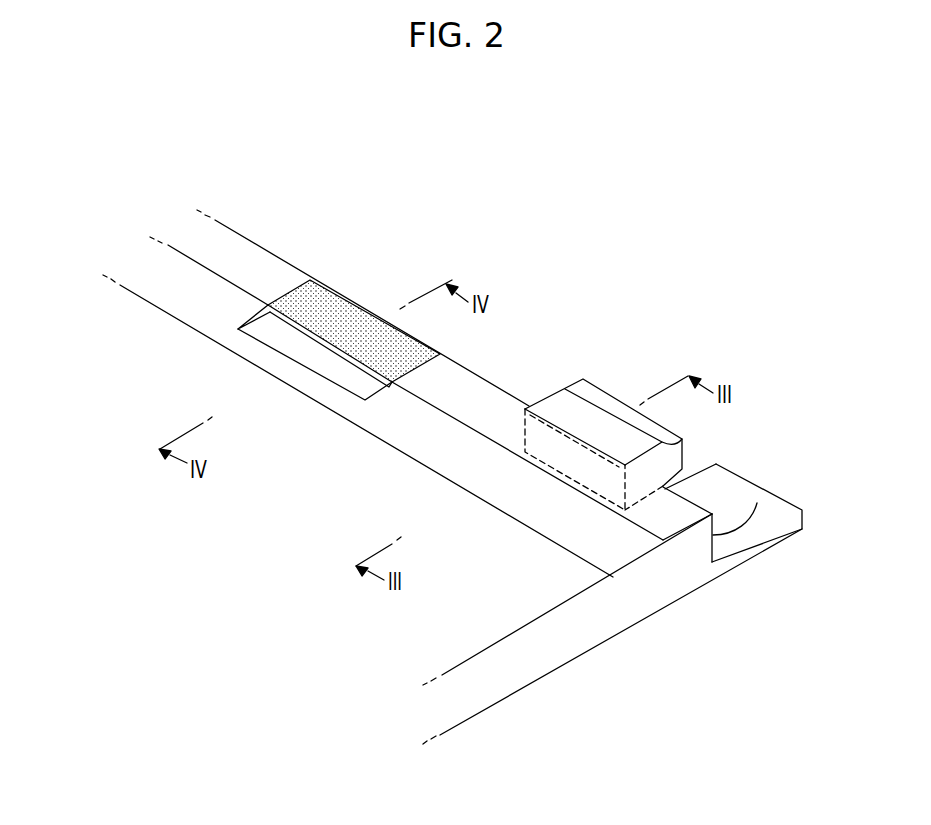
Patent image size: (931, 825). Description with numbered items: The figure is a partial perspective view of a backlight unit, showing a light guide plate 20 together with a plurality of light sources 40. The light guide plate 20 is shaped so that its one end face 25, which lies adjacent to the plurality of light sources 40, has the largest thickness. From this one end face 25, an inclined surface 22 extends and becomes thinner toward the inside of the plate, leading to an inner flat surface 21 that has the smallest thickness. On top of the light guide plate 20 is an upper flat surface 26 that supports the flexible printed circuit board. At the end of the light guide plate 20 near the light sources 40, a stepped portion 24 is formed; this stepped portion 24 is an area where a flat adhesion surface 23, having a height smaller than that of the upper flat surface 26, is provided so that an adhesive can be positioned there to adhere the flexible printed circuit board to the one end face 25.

The light guide plate 20 is at (688, 571).
The inner flat surface 21 is at (523, 598).
The inclined surface 22 is at (617, 547).
The flat adhesion surface 23 is at (290, 344).
The stepped portion 24 is at (374, 330).
The one end face 25 is at (757, 503).
The upper flat surface 26 is at (482, 398).
The light sources 40 is at (676, 452).